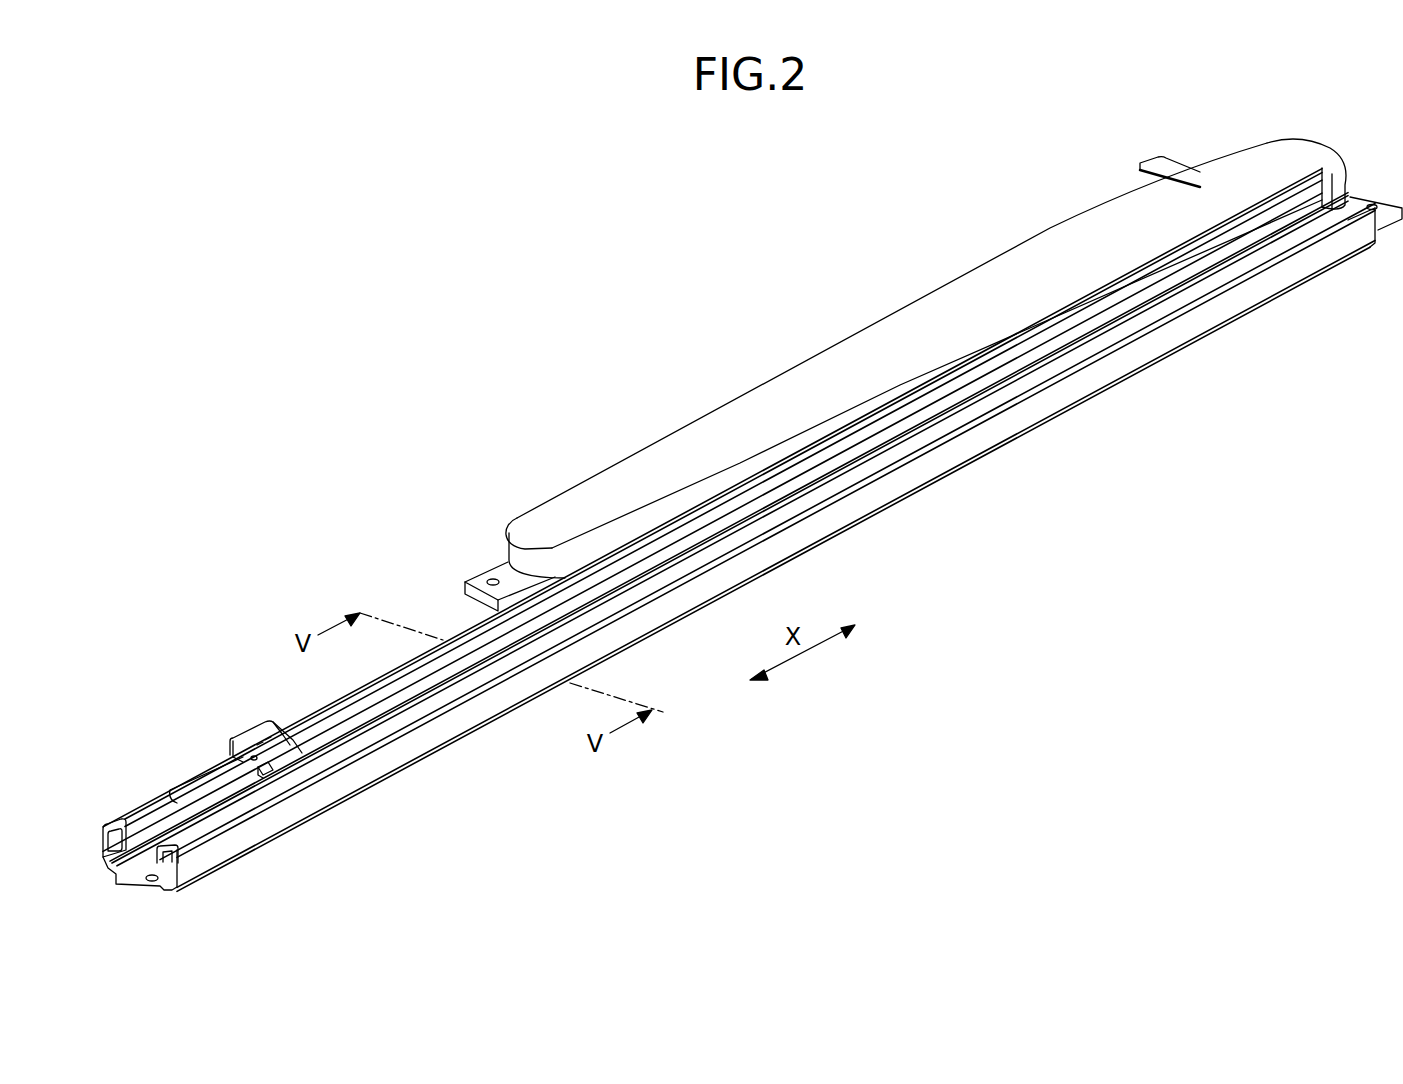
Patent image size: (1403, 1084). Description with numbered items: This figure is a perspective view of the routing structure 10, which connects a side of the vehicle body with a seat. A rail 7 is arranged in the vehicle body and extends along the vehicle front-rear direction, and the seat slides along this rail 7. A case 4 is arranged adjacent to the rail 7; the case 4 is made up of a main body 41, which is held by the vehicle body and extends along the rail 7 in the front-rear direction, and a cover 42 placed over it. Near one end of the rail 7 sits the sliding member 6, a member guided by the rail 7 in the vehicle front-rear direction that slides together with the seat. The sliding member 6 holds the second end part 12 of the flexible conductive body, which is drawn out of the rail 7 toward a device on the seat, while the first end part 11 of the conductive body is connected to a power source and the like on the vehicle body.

The case 4 is at (902, 355).
The sliding member 6 is at (297, 752).
The rail 7 is at (385, 762).
The routing structure 10 is at (1040, 182).
The first end part 11 is at (1170, 163).
The second end part 12 is at (218, 777).
The main body 41 is at (500, 568).
The cover 42 is at (665, 467).